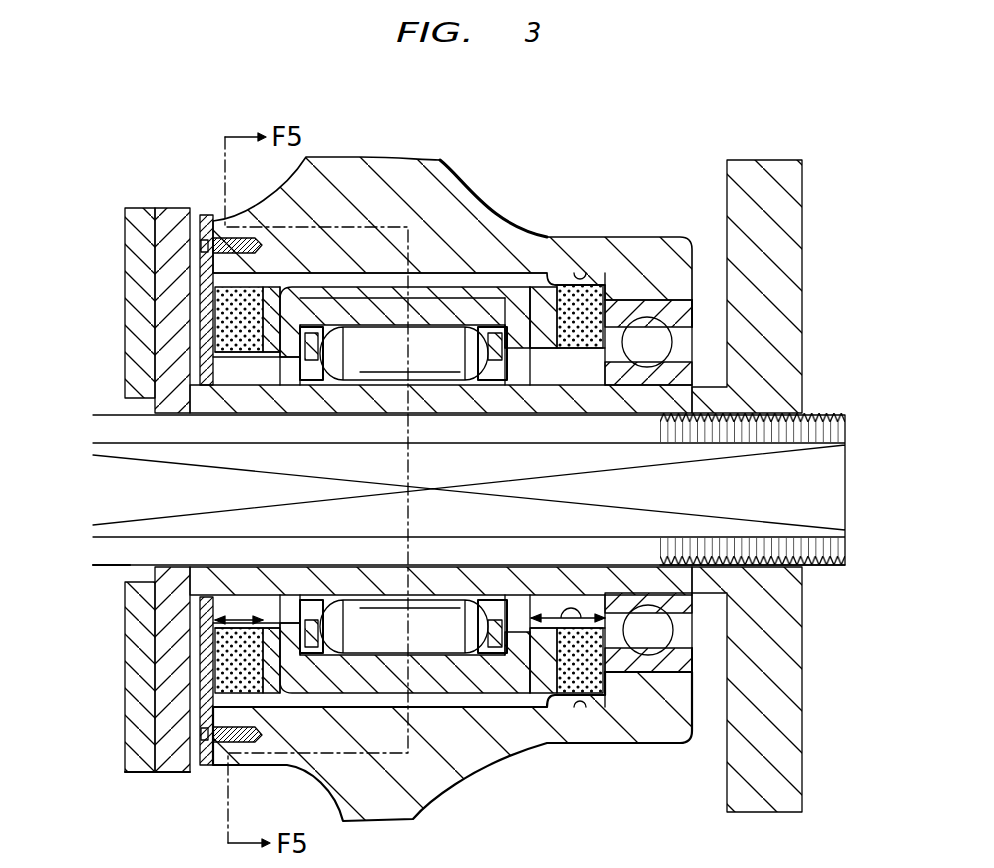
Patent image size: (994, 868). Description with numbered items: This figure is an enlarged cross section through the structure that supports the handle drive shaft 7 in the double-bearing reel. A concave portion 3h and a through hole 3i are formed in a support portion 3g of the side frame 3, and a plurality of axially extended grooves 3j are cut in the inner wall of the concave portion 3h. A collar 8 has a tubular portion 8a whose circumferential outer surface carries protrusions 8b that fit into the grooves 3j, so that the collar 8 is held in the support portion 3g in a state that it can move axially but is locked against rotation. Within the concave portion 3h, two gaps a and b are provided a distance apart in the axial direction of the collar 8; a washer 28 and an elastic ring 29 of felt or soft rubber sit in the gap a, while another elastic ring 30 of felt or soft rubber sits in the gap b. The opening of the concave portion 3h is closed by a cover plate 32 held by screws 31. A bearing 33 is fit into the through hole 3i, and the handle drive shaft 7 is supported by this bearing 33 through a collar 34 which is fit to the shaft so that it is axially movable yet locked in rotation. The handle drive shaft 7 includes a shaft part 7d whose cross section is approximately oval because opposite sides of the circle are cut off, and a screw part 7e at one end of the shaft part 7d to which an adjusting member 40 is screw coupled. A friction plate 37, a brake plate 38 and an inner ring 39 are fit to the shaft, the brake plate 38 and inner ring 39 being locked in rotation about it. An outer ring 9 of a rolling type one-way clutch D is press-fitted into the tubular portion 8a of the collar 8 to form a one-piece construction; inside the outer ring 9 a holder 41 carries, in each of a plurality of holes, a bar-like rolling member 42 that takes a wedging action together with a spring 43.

The side frame 3 is at (650, 230).
The support portion 3g is at (215, 222).
The concave portion 3h is at (598, 283).
The through hole 3i is at (693, 307).
The grooves 3j is at (583, 270).
The handle drive shaft 7 is at (104, 400).
The shaft part 7d is at (115, 558).
The screw part 7e is at (822, 563).
The collar 8 is at (381, 264).
The tubular portion 8a is at (548, 280).
The protrusions 8b is at (535, 278).
The outer ring 9 is at (463, 325).
The washer 28 is at (272, 290).
The elastic ring 29 is at (227, 668).
The elastic ring 30 is at (575, 690).
The screws 31 is at (197, 255).
The cover plate 32 is at (202, 218).
The bearing 33 is at (688, 318).
The collar 34 is at (690, 372).
The friction plate 37 is at (130, 722).
The brake plate 38 is at (177, 767).
The inner ring 39 is at (438, 388).
The adjusting member 40 is at (802, 180).
The holder 41 is at (500, 340).
The rolling member 42 is at (417, 335).
The spring 43 is at (487, 347).
The one-way clutch D is at (347, 290).
The gap a is at (239, 607).
The gap b is at (580, 612).